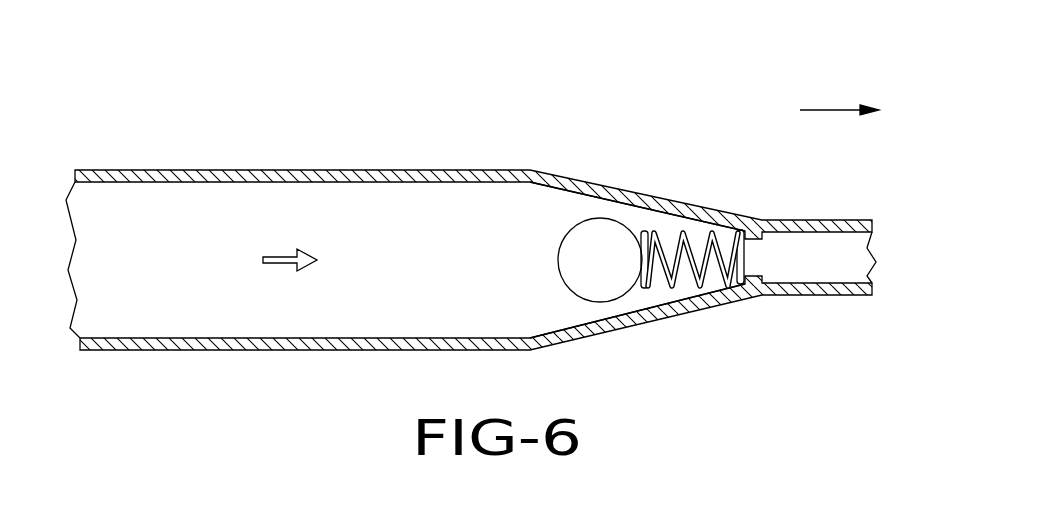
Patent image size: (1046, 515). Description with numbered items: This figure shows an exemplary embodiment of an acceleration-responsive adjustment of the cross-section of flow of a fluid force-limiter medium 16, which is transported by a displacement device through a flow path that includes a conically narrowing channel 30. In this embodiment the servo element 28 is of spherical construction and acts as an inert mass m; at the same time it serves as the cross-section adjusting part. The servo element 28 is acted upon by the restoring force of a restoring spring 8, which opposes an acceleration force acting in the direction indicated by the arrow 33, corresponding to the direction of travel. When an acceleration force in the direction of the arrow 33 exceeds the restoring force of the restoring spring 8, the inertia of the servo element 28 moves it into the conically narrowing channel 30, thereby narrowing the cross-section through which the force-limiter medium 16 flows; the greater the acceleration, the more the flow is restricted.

The force-limiter medium 16 is at (383, 273).
The servo element 28 is at (612, 291).
The conically narrowing channel 30 is at (606, 217).
The restoring spring 8 is at (664, 236).
The arrow 33 is at (820, 110).